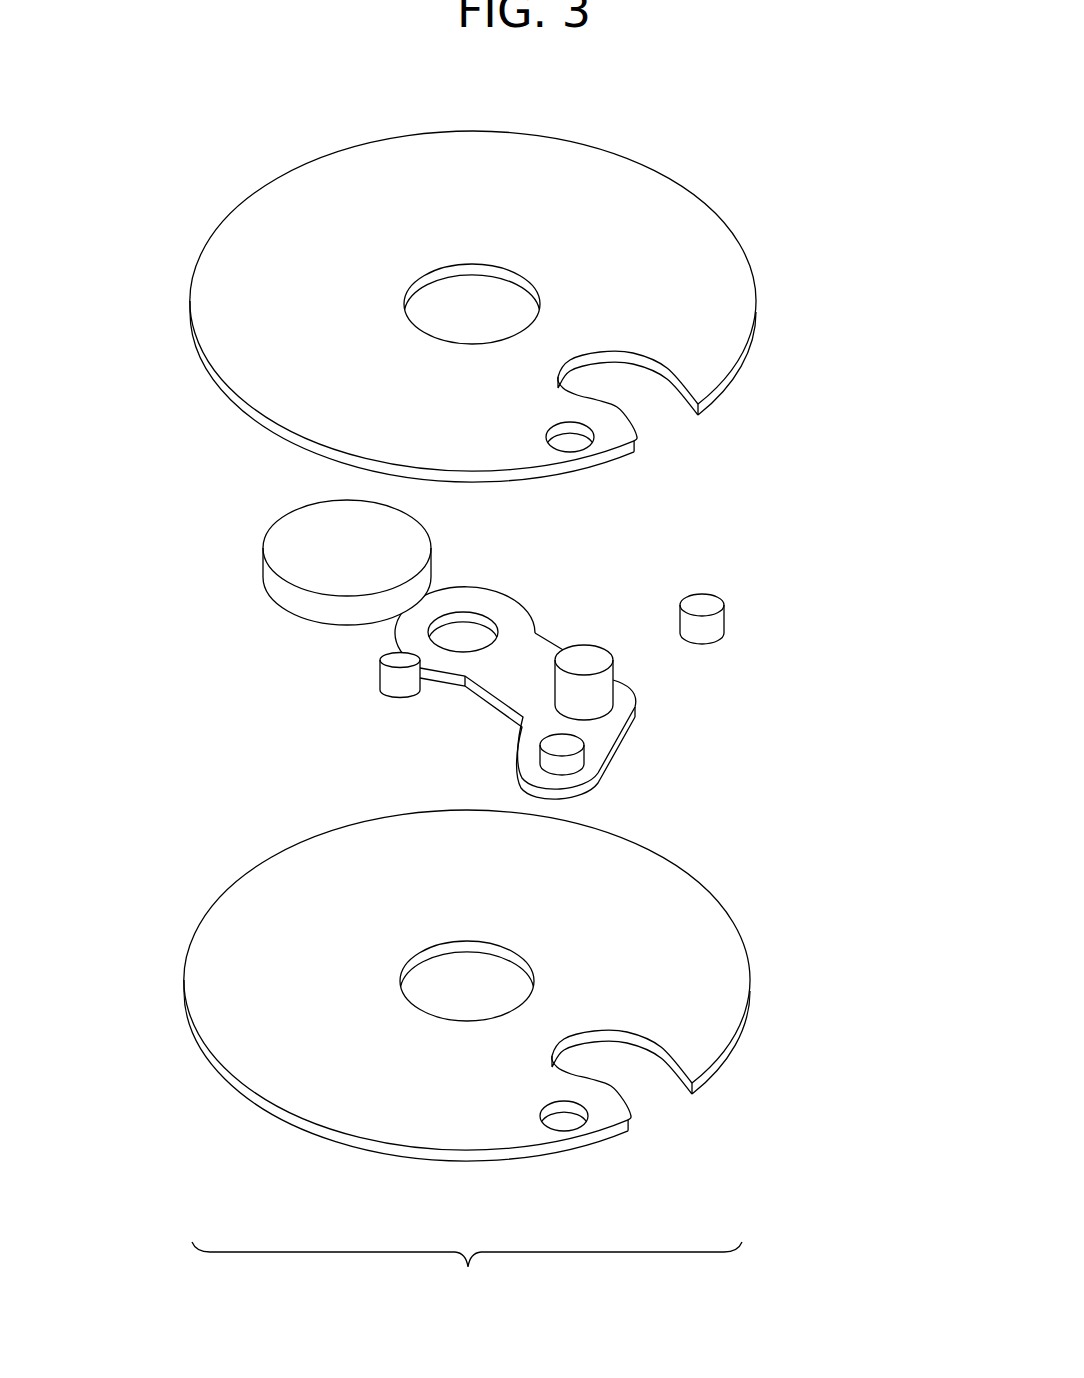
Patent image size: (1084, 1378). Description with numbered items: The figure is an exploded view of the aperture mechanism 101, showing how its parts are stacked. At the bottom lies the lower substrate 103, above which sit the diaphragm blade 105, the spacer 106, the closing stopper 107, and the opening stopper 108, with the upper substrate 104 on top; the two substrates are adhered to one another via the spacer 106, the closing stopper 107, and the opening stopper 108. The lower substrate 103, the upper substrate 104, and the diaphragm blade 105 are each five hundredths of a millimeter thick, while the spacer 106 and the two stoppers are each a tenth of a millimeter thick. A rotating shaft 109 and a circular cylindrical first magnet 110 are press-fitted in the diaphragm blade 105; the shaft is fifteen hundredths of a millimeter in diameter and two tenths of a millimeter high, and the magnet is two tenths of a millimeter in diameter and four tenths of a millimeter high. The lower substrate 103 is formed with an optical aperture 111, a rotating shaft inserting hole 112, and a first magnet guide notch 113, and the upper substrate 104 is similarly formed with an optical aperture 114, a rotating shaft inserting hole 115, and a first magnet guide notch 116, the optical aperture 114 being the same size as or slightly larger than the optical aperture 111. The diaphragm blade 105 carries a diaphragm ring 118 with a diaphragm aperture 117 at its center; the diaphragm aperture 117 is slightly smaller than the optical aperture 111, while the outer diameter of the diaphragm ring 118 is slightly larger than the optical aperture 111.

The aperture mechanism 101 is at (467, 1276).
The lower substrate 103 is at (703, 920).
The upper substrate 104 is at (705, 246).
The diaphragm blade 105 is at (537, 648).
The spacer 106 is at (292, 542).
The closing stopper 107 is at (375, 682).
The opening stopper 108 is at (713, 627).
The rotating shaft 109 is at (580, 753).
The first magnet 110 is at (602, 680).
The optical aperture 111 is at (430, 958).
The rotating shaft inserting hole 112 is at (573, 1108).
The first magnet guide notch 113 is at (615, 1045).
The optical aperture 114 is at (461, 270).
The rotating shaft inserting hole 115 is at (570, 445).
The first magnet guide notch 116 is at (641, 370).
The diaphragm aperture 117 is at (467, 617).
The diaphragm ring 118 is at (488, 603).